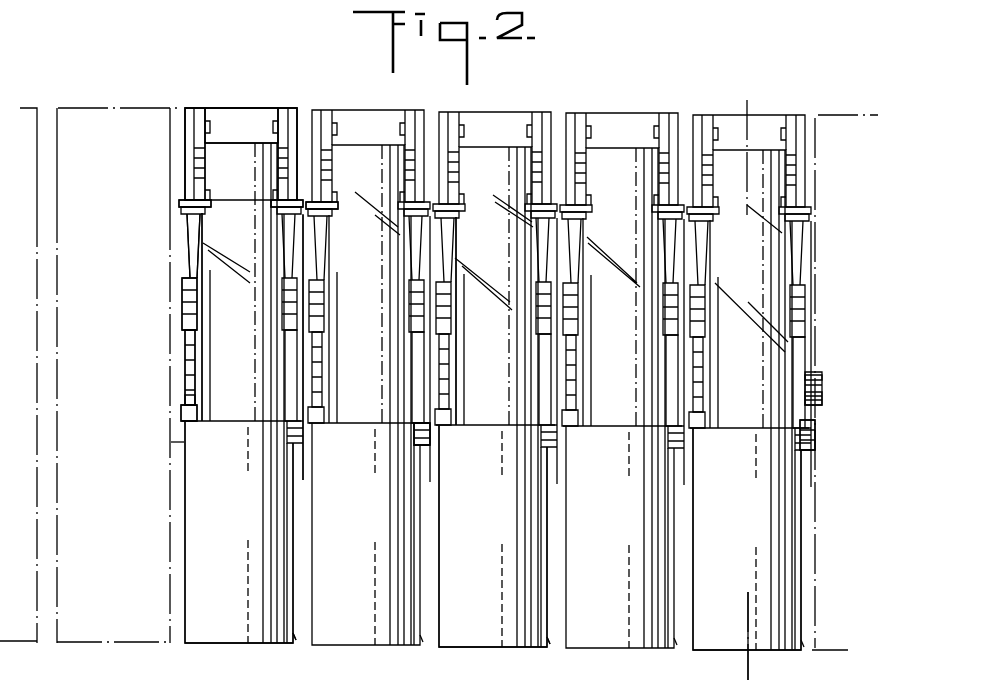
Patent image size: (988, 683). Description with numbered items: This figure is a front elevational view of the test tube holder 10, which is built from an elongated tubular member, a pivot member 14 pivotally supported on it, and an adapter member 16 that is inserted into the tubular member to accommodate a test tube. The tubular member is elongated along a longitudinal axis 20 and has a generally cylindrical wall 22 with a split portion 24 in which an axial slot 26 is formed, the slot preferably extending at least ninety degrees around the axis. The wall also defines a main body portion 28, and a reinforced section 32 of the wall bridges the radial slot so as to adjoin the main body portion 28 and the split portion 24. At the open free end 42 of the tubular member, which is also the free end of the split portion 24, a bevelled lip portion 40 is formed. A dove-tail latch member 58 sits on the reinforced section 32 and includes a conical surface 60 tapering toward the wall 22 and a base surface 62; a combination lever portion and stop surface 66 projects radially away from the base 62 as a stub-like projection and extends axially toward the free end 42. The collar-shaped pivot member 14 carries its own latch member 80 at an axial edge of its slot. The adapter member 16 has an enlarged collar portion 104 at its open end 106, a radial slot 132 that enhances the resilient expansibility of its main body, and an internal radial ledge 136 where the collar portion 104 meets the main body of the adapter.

The test tube holder 10 is at (115, 90).
The pivot member 14 is at (198, 340).
The adapter member 16 is at (299, 132).
The longitudinal axis 20 is at (748, 675).
The cylindrical wall 22 is at (292, 636).
The split portion 24 is at (190, 231).
The axial slot 26 is at (207, 262).
The main body portion 28 is at (258, 530).
The reinforced section 32 is at (188, 363).
The bevelled lip portion 40 is at (282, 203).
The open free end 42 is at (323, 208).
The dove-tail latch member 58 is at (192, 390).
The conical surface 60 is at (818, 430).
The base surface 62 is at (823, 415).
The combination lever portion and stop surface 66 is at (817, 373).
The latch member 80 is at (181, 413).
The enlarged collar portion 104 is at (183, 118).
The open end 106 is at (287, 111).
The radial slot 132 is at (206, 117).
The internal radial ledge 136 is at (207, 191).